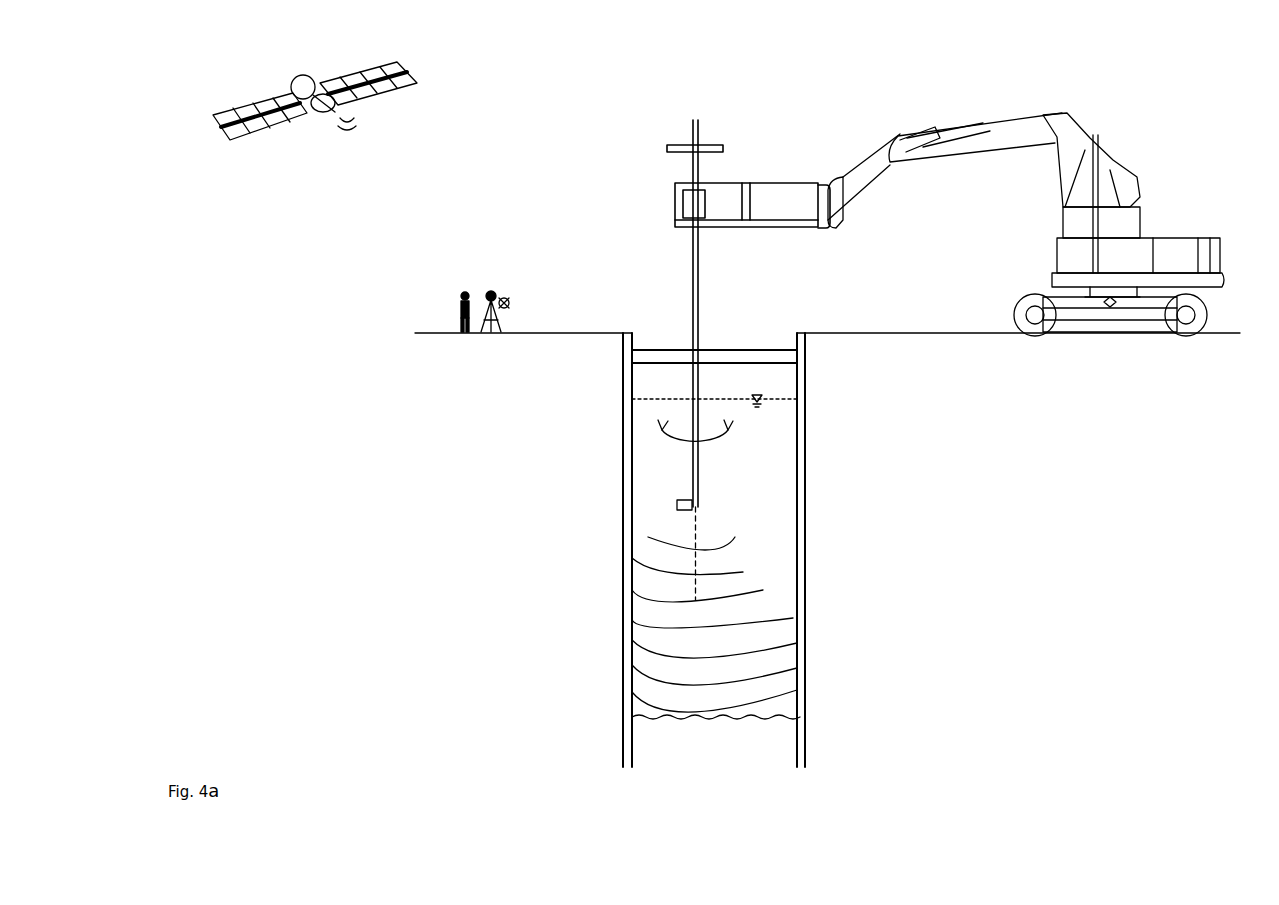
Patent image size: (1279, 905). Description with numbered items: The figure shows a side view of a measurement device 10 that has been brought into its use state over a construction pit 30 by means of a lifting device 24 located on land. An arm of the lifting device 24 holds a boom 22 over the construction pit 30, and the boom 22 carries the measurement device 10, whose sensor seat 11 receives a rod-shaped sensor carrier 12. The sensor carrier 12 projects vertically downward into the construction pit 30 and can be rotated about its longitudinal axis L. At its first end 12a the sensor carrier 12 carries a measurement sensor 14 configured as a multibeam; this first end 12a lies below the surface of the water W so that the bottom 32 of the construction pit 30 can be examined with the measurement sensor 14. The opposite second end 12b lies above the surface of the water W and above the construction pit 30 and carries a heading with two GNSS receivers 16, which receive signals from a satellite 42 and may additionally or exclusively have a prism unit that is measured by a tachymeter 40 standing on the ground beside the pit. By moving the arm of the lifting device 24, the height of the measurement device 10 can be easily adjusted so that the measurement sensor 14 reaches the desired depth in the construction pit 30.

The measurement device 10 is at (680, 298).
The sensor seat 11 is at (675, 210).
The sensor carrier 12 is at (693, 457).
The first end 12a is at (697, 470).
The second end 12b is at (693, 168).
The measurement sensor 14 is at (680, 508).
The two GNSS receivers 16 is at (677, 143).
The boom 22 is at (793, 183).
The lifting device 24 is at (1063, 223).
The construction pit 30 is at (800, 493).
The bottom 32 is at (750, 717).
The tachymeter 40 is at (493, 297).
The satellite 42 is at (220, 127).
The surface of the water W is at (650, 400).
The longitudinal axis L is at (717, 550).